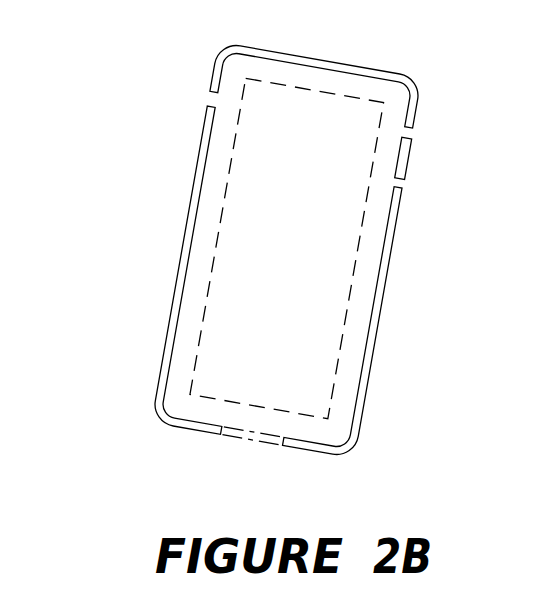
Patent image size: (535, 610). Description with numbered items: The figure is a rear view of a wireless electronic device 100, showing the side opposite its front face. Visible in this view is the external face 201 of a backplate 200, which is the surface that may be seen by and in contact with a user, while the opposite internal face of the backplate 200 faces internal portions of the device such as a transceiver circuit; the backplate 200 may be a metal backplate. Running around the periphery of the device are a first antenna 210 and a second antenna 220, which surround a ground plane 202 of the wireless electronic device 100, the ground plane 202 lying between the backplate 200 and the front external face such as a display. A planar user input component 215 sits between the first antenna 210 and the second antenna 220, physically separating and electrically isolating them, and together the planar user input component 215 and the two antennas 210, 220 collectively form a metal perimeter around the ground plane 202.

The wireless electronic device 100 is at (156, 137).
The backplate 200 is at (194, 256).
The external face 201 is at (195, 297).
The ground plane 202 is at (283, 268).
The first antenna 210 is at (340, 63).
The planar user input component 215 is at (402, 160).
The second antenna 220 is at (388, 230).